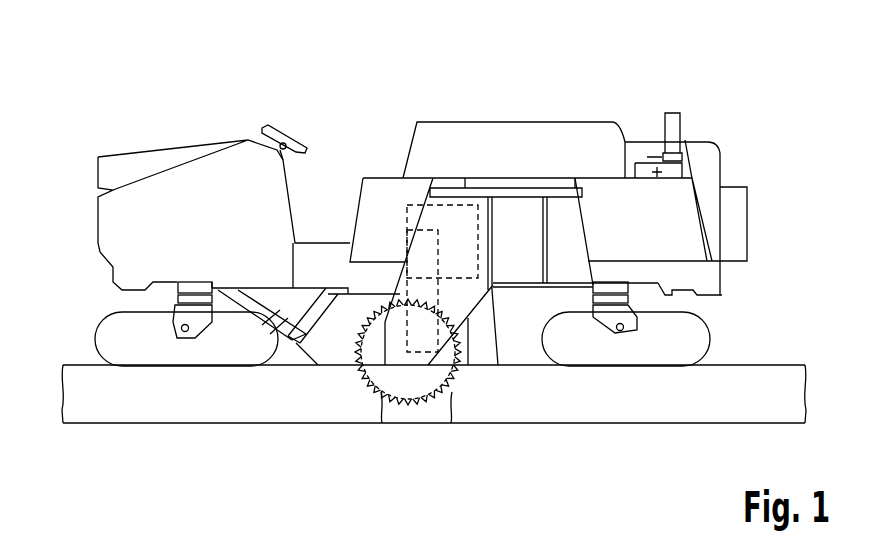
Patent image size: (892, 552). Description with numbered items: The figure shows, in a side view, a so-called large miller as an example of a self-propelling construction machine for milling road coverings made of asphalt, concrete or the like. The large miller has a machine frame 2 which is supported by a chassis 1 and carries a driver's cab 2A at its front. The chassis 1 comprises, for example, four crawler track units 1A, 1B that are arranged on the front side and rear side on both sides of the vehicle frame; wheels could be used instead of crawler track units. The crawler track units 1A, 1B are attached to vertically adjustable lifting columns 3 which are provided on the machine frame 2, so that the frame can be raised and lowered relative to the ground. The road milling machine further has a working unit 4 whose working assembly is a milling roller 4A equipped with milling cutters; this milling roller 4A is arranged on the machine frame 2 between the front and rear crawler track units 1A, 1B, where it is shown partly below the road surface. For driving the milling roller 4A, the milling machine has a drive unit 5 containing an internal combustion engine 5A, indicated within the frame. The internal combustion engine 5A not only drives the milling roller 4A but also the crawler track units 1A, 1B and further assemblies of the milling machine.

The chassis 1 is at (85, 300).
The crawler track unit 1A is at (98, 340).
The crawler track unit 1B is at (702, 338).
The machine frame 2 is at (411, 96).
The driver's cab 2A is at (254, 120).
The lifting column 3 is at (185, 290).
The working unit 4 is at (398, 376).
The milling roller 4A is at (451, 398).
The drive unit 5 is at (405, 221).
The internal combustion engine 5A is at (432, 263).